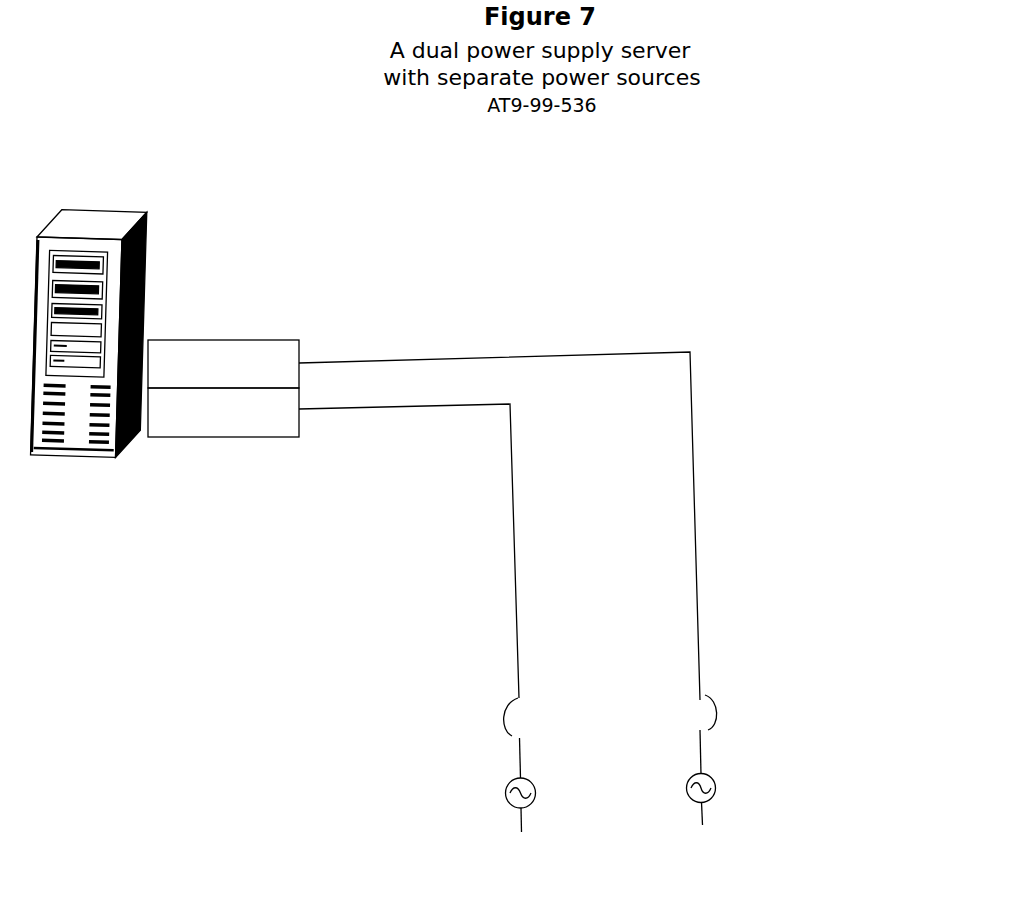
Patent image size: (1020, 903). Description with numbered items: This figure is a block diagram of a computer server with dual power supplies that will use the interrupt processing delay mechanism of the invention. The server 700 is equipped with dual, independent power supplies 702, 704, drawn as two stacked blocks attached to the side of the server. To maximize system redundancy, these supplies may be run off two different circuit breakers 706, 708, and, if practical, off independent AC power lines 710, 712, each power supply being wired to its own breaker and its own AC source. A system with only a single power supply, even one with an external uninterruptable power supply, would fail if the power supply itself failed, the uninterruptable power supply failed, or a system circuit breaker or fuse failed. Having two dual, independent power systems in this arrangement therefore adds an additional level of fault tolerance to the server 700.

The server 700 is at (71, 497).
The power supply 702 is at (209, 385).
The power supply 704 is at (209, 431).
The circuit breaker 706 is at (757, 692).
The circuit breaker 708 is at (454, 711).
The AC power line 710 is at (757, 779).
The AC power line 712 is at (454, 784).